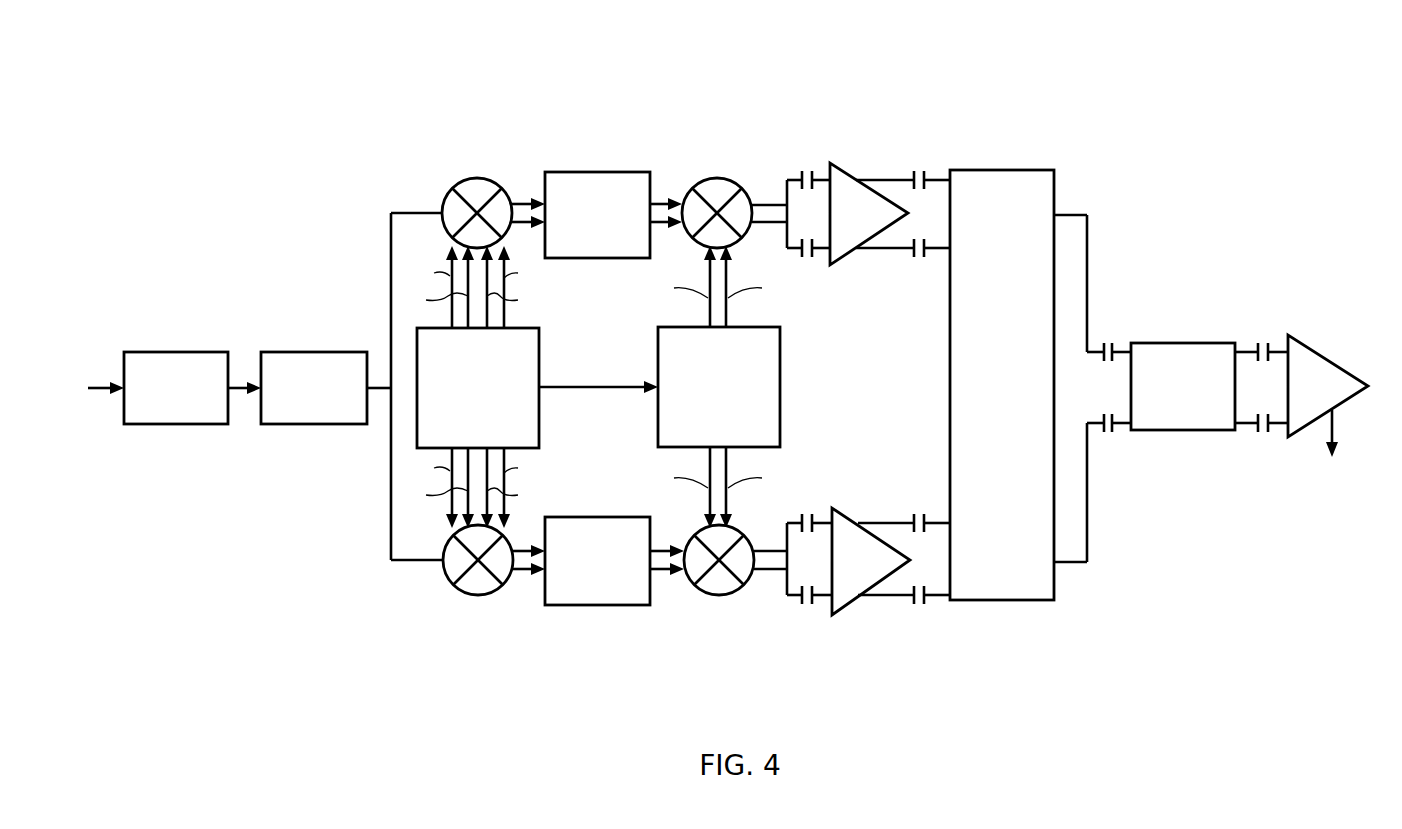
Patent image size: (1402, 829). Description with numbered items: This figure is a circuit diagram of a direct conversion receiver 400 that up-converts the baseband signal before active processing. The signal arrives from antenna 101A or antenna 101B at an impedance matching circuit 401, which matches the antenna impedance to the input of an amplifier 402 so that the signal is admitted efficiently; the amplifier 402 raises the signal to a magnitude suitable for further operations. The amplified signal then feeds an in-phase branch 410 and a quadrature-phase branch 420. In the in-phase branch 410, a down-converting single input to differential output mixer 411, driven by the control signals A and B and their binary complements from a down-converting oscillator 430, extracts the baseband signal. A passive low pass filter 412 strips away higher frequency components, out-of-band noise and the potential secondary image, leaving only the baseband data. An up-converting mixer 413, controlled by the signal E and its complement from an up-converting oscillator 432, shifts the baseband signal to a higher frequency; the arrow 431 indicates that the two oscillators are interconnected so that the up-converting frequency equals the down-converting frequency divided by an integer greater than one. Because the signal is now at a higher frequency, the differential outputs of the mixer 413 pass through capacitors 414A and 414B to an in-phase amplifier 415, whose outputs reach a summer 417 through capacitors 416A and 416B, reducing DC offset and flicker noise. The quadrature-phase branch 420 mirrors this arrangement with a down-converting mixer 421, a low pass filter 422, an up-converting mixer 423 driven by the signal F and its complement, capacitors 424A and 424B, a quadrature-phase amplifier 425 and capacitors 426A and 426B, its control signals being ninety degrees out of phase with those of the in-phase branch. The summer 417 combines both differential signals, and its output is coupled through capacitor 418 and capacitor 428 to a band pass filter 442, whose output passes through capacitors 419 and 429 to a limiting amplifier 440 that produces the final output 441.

The receiver 400 is at (815, 58).
The antenna 101A is at (74, 375).
The antenna 101B is at (62, 435).
The impedance matching circuit 401 is at (192, 388).
The amplifier 402 is at (326, 388).
The in-phase branch 410 is at (380, 214).
The down-converting single input to differential output mixer 411 is at (477, 178).
The low pass filter 412 is at (613, 215).
The up-converting mixer 413 is at (717, 178).
The capacitor 414A is at (806, 172).
The capacitor 414B is at (806, 258).
The in-phase amplifier 415 is at (869, 214).
The capacitor 416A is at (918, 172).
The capacitor 416B is at (918, 257).
The summer 417 is at (1018, 385).
The capacitor 418 is at (1108, 342).
The capacitor 419 is at (1263, 342).
The quadrature-phase branch 420 is at (380, 559).
The down-converting mixer 421 is at (478, 596).
The low pass filter 422 is at (614, 561).
The up-converting mixer 423 is at (719, 596).
The capacitor 424A is at (806, 512).
The capacitor 424B is at (807, 605).
The quadrature-phase amplifier 425 is at (871, 561).
The capacitor 426A is at (919, 514).
The capacitor 426B is at (919, 605).
The capacitor 428 is at (1108, 433).
The capacitor 429 is at (1263, 433).
The down-converting oscillator 430 is at (471, 387).
The arrow 431 is at (614, 392).
The up-converting oscillator 432 is at (720, 387).
The limiting amplifier 440 is at (1328, 386).
The RSSI output 441 is at (1354, 384).
The band pass filter 442 is at (1183, 386).